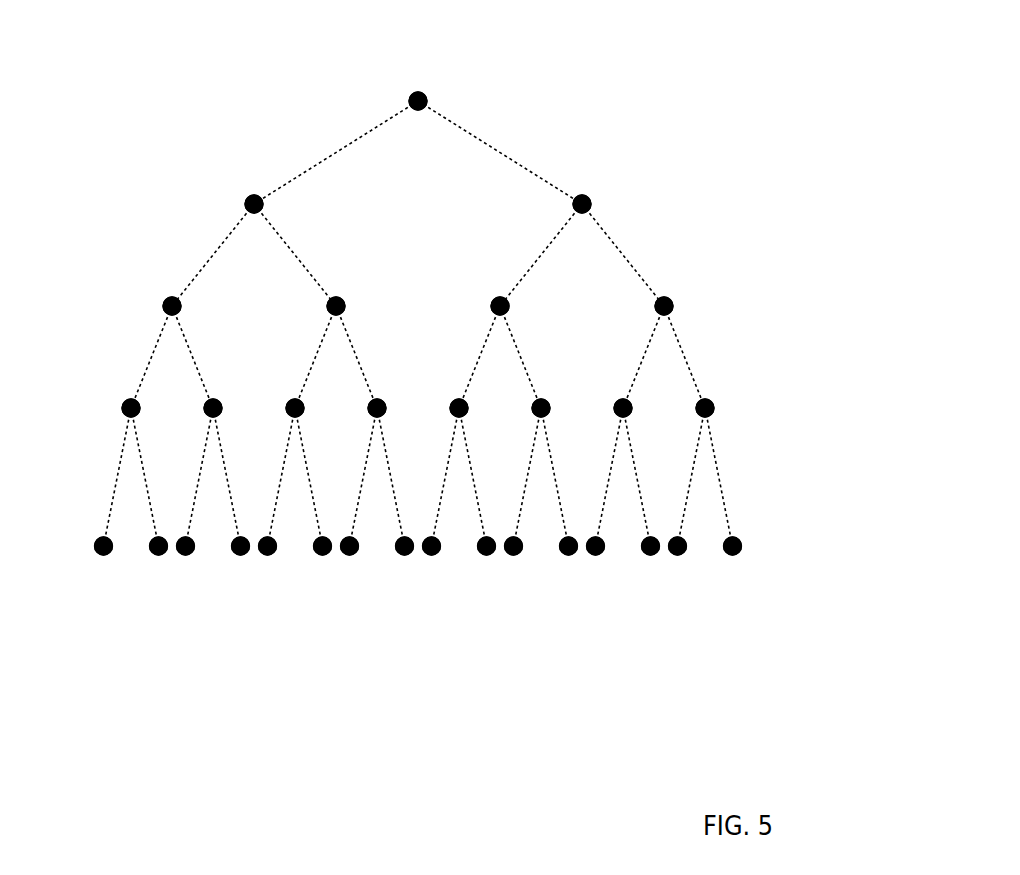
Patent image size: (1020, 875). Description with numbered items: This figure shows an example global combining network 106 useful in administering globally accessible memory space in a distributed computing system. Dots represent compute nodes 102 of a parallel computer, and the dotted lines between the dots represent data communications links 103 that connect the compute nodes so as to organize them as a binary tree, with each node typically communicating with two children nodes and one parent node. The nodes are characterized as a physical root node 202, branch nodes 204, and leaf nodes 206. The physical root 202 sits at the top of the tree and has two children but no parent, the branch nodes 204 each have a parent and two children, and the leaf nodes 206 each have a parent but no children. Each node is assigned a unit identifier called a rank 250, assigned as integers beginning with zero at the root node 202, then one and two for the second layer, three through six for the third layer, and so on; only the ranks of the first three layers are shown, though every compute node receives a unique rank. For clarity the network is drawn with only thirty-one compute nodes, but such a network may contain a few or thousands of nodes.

The compute nodes 102 is at (487, 555).
The data communications links 103 is at (347, 147).
The global combining network 106 is at (449, 399).
The physical root node 202 is at (542, 76).
The branch nodes 204 is at (755, 156).
The leaf nodes 206 is at (755, 579).
The rank 250 is at (538, 215).